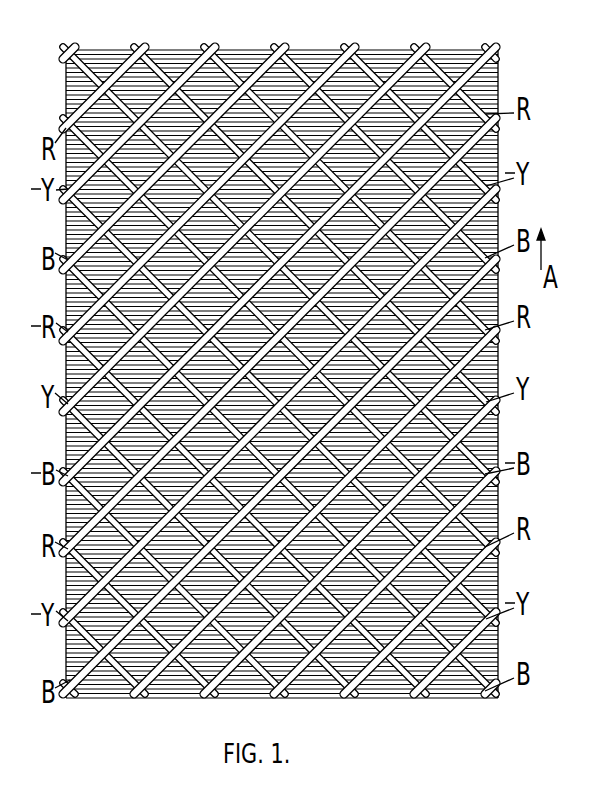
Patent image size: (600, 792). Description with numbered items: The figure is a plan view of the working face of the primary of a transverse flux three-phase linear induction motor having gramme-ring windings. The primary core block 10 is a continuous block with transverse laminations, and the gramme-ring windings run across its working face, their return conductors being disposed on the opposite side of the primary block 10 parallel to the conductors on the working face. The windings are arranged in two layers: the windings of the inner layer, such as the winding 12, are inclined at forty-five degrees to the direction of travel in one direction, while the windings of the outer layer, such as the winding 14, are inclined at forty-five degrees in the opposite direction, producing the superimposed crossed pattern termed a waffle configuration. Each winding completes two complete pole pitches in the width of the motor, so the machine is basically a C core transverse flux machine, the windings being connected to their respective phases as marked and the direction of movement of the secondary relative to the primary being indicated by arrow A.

The primary core block 10 is at (282, 356).
The winding of the inner layer 12 is at (43, 97).
The winding of the outer layer 14 is at (445, 41).